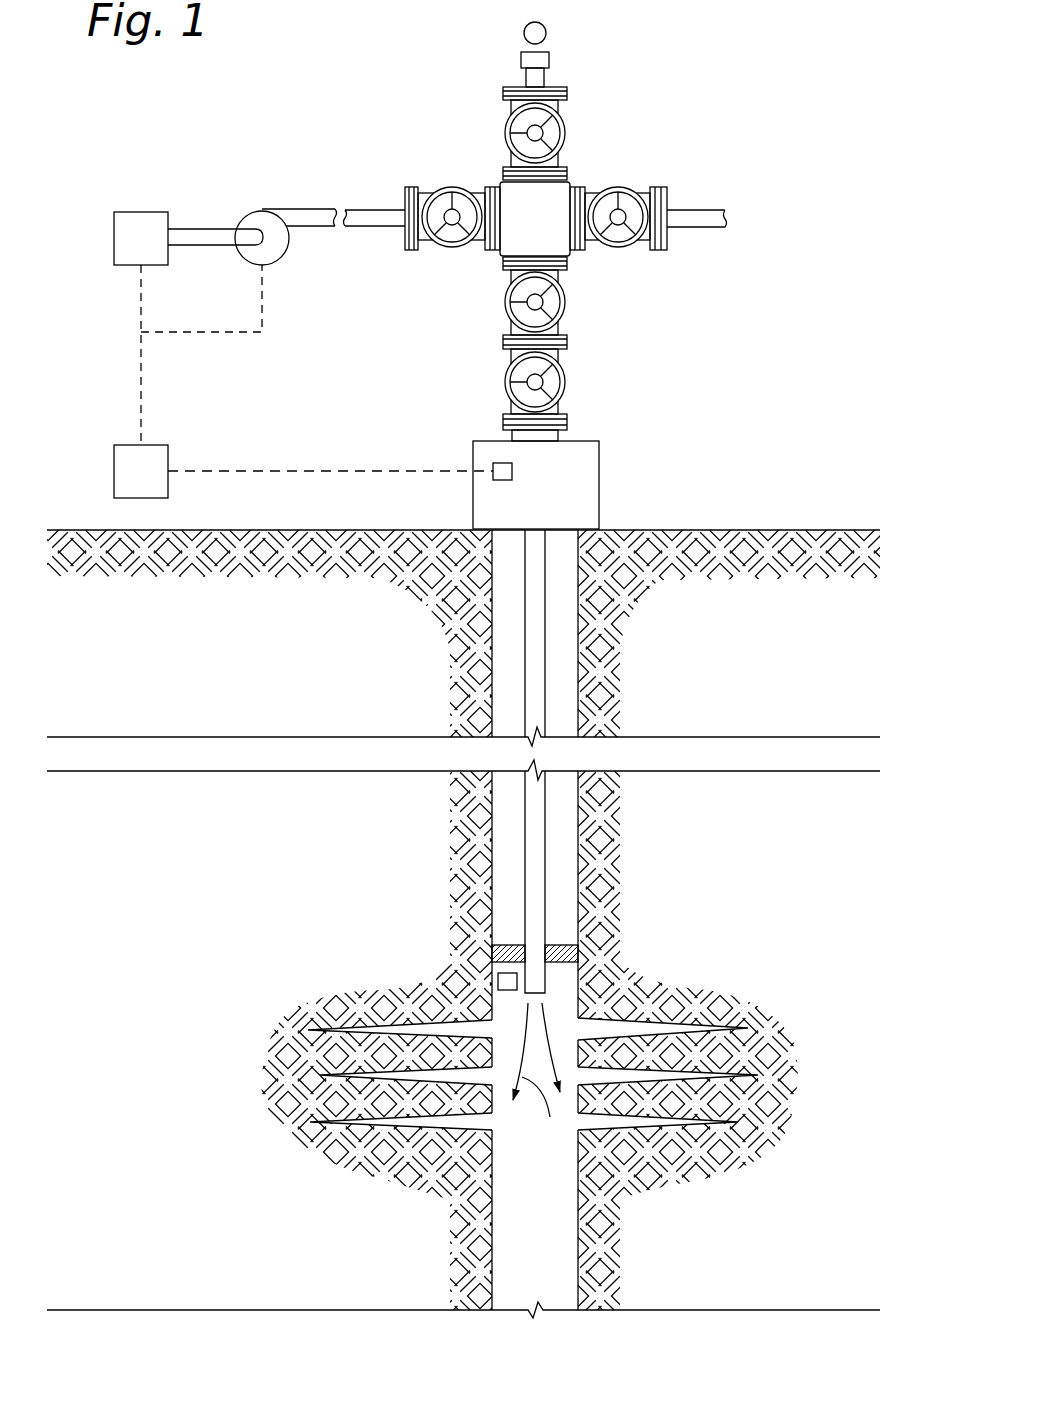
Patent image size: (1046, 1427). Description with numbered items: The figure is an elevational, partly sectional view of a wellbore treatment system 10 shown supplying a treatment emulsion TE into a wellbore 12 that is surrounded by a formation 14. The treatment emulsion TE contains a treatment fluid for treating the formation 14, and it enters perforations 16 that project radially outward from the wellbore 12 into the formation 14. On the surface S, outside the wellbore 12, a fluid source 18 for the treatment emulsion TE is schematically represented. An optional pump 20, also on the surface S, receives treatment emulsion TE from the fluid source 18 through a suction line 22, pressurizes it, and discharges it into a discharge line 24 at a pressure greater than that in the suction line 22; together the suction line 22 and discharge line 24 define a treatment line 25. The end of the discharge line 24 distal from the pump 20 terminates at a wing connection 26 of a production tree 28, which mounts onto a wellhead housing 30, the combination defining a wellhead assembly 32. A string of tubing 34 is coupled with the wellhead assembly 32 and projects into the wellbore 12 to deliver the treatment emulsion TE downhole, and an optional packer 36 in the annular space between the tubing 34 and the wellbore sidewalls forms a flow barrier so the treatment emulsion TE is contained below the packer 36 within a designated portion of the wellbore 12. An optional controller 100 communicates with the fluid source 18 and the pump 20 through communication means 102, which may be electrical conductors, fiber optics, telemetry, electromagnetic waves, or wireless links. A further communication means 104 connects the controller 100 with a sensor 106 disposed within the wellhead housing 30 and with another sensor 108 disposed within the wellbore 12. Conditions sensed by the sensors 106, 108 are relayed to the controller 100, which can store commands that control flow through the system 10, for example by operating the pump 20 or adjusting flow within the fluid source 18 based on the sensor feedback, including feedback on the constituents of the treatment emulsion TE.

The wellbore treatment system 10 is at (454, 268).
The wellbore 12 is at (522, 1270).
The formation 14 is at (793, 1082).
The perforations 16 is at (757, 1000).
The fluid source 18 is at (114, 232).
The pump 20 is at (280, 253).
The suction line 22 is at (203, 229).
The discharge line 24 is at (367, 210).
The treatment line 25 is at (297, 190).
The wing connection 26 is at (410, 185).
The production tree 28 is at (592, 120).
The wellhead housing 30 is at (599, 493).
The wellhead assembly 32 is at (588, 231).
The tubing 34 is at (542, 678).
The packer 36 is at (563, 953).
The controller 100 is at (114, 463).
The communication means 102 is at (141, 362).
The communication means 104 is at (280, 472).
The sensor 106 is at (512, 471).
The sensor 108 is at (497, 978).
The surface S is at (767, 530).
The treatment emulsion TE is at (538, 1075).